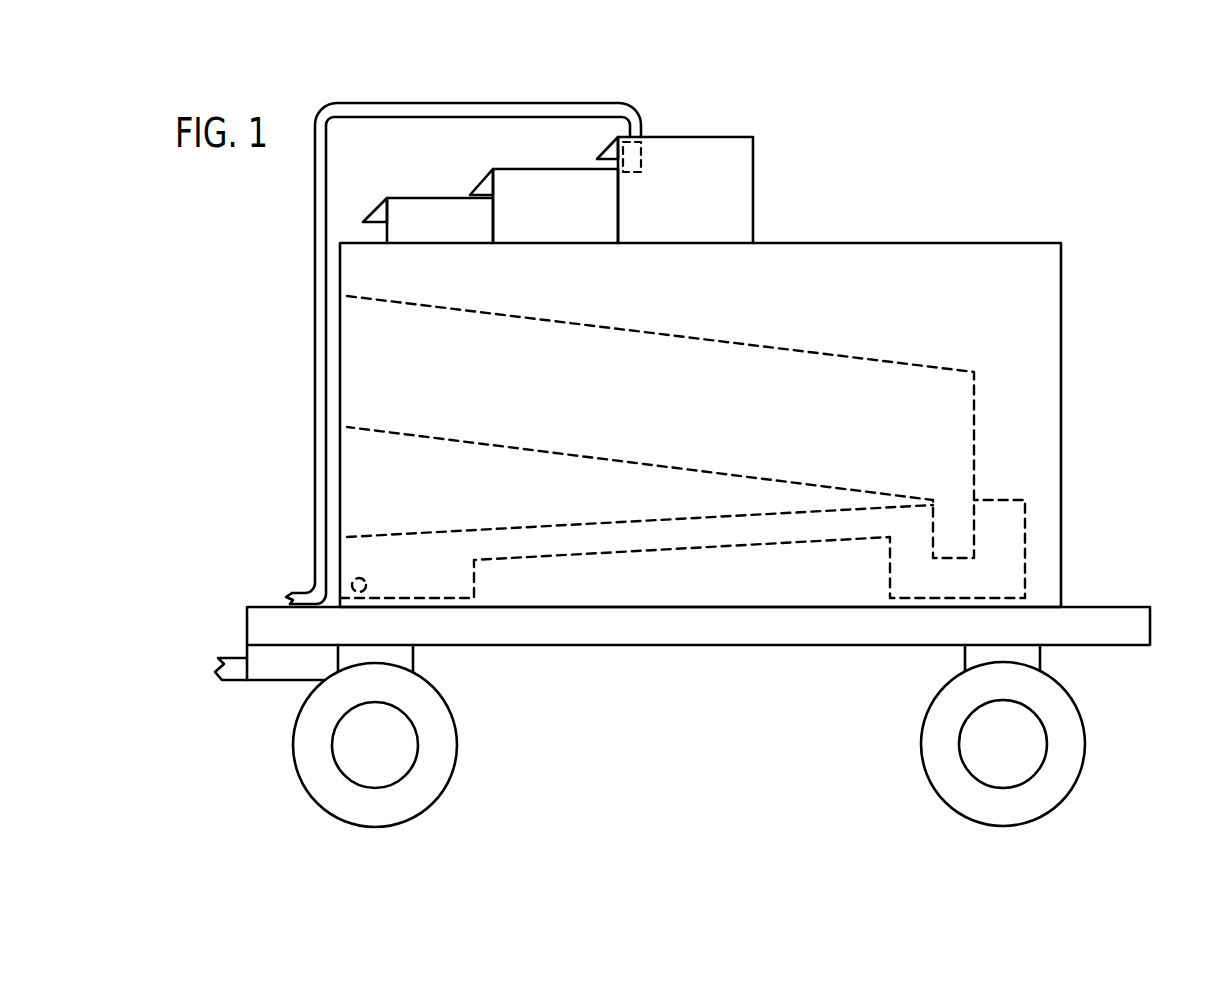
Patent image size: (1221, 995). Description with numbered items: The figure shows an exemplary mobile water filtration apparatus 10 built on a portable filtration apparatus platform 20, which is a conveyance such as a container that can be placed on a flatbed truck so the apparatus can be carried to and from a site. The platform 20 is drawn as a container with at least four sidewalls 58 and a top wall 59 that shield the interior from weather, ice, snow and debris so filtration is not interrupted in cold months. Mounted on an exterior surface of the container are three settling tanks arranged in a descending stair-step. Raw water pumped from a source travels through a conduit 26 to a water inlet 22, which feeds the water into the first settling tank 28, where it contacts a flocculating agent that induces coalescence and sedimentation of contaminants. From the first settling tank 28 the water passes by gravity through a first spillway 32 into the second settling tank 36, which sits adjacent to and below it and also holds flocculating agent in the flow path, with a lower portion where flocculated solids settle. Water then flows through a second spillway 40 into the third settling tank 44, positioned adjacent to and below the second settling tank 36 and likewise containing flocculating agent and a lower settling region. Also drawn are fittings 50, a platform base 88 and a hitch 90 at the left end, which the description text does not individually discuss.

The water filtration apparatus 10 is at (1145, 130).
The portable filtration apparatus platform 20 is at (1061, 345).
The water inlet 22 is at (633, 124).
The conduit 26 is at (318, 343).
The first settling tank 28 is at (742, 185).
The first spillway 32 is at (609, 150).
The second settling tank 36 is at (538, 196).
The second spillway 40 is at (481, 182).
The third settling tank 44 is at (441, 221).
The fitting 50 is at (378, 216).
The sidewalls 58 is at (1061, 263).
The top wall 59 is at (917, 230).
The trailer platform 88 is at (1133, 632).
The hitch 90 is at (232, 670).